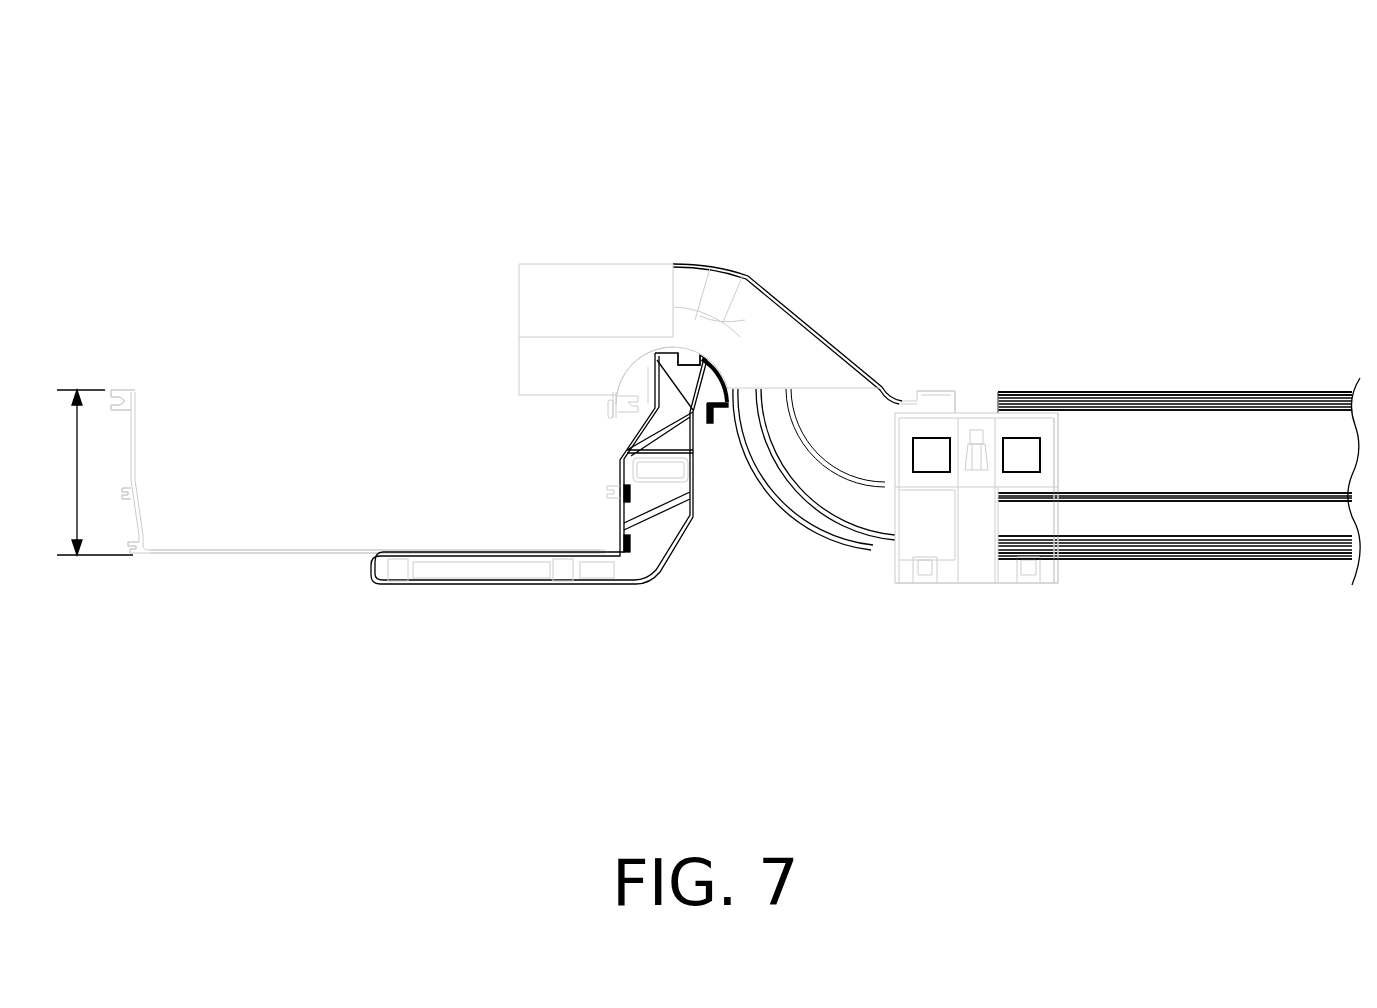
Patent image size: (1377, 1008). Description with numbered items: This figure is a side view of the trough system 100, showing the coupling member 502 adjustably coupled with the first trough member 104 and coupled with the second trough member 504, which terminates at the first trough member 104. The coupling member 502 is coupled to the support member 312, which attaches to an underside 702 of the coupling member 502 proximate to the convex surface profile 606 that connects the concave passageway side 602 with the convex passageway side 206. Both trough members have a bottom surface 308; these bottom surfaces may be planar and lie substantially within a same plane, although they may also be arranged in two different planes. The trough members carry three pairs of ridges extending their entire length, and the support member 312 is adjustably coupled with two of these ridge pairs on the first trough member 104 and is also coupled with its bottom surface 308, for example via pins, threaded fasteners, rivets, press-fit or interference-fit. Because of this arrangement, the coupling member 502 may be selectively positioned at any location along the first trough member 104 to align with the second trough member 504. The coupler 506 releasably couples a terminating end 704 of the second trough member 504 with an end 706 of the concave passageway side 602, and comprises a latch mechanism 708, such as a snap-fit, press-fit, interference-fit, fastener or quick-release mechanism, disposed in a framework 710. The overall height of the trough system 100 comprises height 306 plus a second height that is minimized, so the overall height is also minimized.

The trough system 100 is at (171, 84).
The first trough member 104 is at (243, 571).
The convex passageway side 206 is at (630, 359).
The height 306 is at (95, 472).
The bottom surface 308 is at (345, 557).
The support member 312 is at (697, 546).
The coupling member 502 is at (496, 231).
The second trough member 504 is at (1149, 569).
The coupler 506 is at (978, 406).
The concave passageway side 602 is at (766, 484).
The convex surface profile 606 is at (723, 363).
The underside 702 is at (655, 343).
The terminating end 704 is at (1006, 383).
The end 706 is at (952, 387).
The latch mechanism 708 is at (1009, 471).
The framework 710 is at (1060, 458).